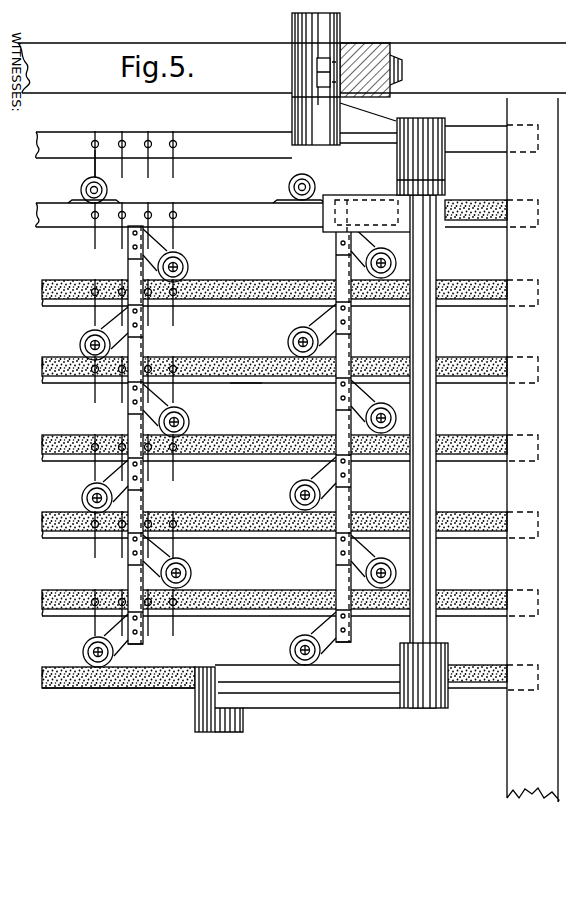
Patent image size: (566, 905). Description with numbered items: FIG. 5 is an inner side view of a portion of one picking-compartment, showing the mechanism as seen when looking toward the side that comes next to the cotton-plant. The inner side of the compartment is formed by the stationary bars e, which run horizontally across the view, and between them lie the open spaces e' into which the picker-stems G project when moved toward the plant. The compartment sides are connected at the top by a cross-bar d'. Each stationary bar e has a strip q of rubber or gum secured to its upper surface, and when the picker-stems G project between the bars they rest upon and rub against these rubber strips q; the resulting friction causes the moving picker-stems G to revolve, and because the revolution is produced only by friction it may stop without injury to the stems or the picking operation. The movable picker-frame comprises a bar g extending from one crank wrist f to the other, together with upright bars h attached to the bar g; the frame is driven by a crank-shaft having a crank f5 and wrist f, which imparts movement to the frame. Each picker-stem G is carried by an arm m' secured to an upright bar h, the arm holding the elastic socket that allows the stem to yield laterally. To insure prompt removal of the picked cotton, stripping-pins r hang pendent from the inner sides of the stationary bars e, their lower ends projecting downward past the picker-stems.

The cross-bar d' is at (371, 57).
The wrist f is at (426, 330).
The crank f5 is at (345, 727).
The bar g is at (220, 207).
The stripping-pin r is at (90, 245).
The upright bar h is at (133, 415).
The picker-stem G is at (289, 337).
The arm m' is at (250, 443).
The rubber strip q is at (212, 364).
The stationary bar e is at (274, 485).
The open space e' is at (244, 401).